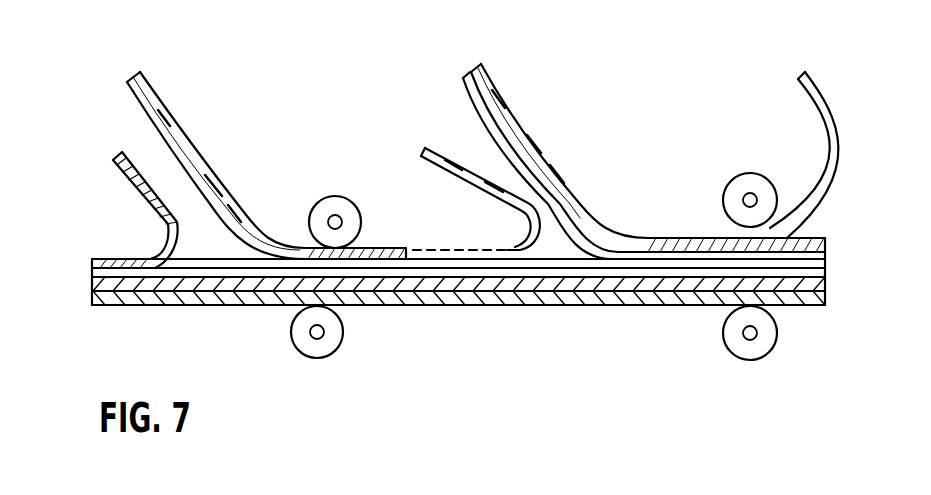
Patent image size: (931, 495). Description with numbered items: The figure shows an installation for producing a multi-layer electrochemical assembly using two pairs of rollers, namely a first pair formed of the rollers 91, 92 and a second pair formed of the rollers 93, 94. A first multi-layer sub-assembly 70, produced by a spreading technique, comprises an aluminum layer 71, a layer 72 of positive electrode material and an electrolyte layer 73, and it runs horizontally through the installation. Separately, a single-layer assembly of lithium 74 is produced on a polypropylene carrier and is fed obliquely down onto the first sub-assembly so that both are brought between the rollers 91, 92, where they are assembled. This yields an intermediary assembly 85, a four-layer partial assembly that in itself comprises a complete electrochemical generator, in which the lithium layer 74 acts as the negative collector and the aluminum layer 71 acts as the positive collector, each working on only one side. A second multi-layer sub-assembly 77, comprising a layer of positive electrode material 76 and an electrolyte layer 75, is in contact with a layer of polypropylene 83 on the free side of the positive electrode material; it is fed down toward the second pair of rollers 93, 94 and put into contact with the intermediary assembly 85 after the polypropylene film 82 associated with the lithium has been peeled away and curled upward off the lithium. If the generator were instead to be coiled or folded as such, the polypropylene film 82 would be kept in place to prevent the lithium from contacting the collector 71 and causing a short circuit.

The first multi-layer sub-assembly 70 is at (90, 266).
The aluminum layer 71 is at (104, 308).
The layer of positive electrode material 72 is at (148, 289).
The electrolyte layer 73 is at (188, 284).
The single-layer assembly of lithium 74 is at (137, 99).
The electrolyte layer 75 is at (462, 80).
The layer of positive electrode material 76 is at (540, 162).
The second multi-layer sub-assembly 77 is at (464, 67).
The polypropylene film 82 is at (462, 175).
The layer of polypropylene 83 is at (583, 200).
The intermediary assembly 85 is at (398, 243).
The roller 91 is at (318, 203).
The roller 92 is at (344, 343).
The roller 93 is at (750, 173).
The roller 94 is at (727, 338).